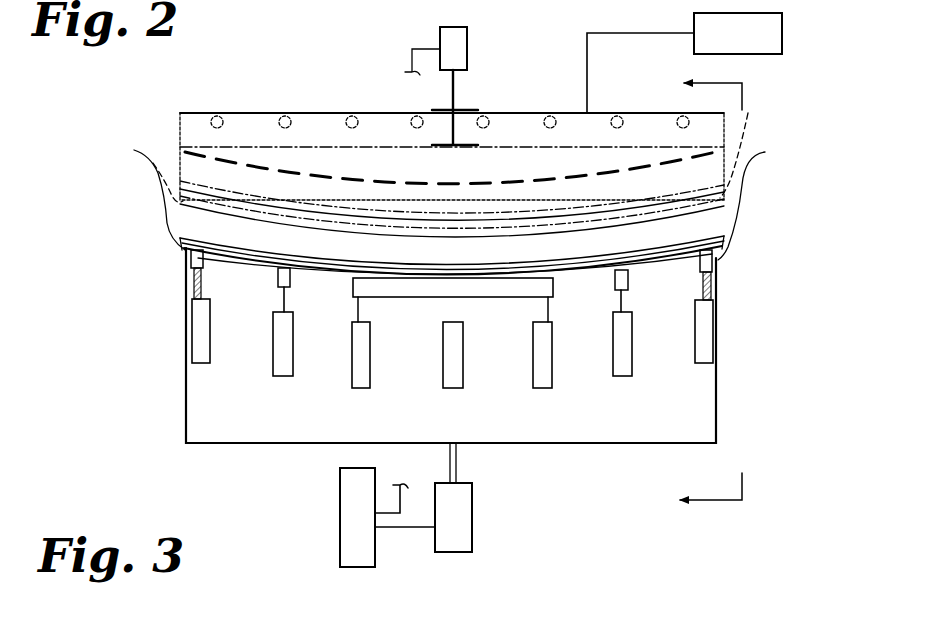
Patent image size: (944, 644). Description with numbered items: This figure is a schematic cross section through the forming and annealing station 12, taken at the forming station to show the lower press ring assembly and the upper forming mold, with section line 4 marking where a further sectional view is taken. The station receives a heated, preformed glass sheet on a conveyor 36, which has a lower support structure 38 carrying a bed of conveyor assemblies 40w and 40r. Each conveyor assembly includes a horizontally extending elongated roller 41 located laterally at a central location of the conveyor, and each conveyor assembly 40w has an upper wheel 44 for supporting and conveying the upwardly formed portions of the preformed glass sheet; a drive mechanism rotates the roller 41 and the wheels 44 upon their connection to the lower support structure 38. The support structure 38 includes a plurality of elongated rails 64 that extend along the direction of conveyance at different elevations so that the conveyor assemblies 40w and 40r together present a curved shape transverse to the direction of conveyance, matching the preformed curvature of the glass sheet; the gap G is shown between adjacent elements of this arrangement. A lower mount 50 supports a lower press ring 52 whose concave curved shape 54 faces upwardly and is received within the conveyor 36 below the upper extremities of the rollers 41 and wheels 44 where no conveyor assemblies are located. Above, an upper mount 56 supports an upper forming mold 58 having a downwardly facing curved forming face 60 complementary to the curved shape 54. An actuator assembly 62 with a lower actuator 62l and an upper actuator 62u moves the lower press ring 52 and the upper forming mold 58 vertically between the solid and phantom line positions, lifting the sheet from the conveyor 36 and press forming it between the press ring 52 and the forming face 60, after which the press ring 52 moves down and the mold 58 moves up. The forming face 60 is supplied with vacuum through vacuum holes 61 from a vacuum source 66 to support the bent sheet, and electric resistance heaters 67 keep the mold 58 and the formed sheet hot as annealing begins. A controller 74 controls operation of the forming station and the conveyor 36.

The forming and annealing station 12 is at (333, 60).
The conveyor 36 is at (720, 273).
The lower support structure 38 is at (702, 370).
The conveyor assembly 40w is at (768, 265).
The conveyor assembly 40r is at (350, 298).
The roller 41 is at (482, 276).
The upper wheel 44 is at (191, 258).
The lower mount 50 is at (340, 444).
The lower press ring 52 is at (456, 200).
The concave curved shape 54 is at (583, 262).
The upper mount 56 is at (480, 145).
The upper forming mold 58 is at (726, 132).
The forming face 60 is at (603, 200).
The vacuum holes 61 is at (366, 182).
The actuator assembly 62 is at (484, 545).
The upper actuator 62u is at (467, 52).
The lower actuator 62l is at (472, 520).
The rails 64 is at (210, 345).
The vacuum source 66 is at (782, 40).
The electric resistance heaters 67 is at (280, 113).
The controller 74 is at (336, 547).
The gap G is at (214, 245).
The section line 4 is at (730, 286).